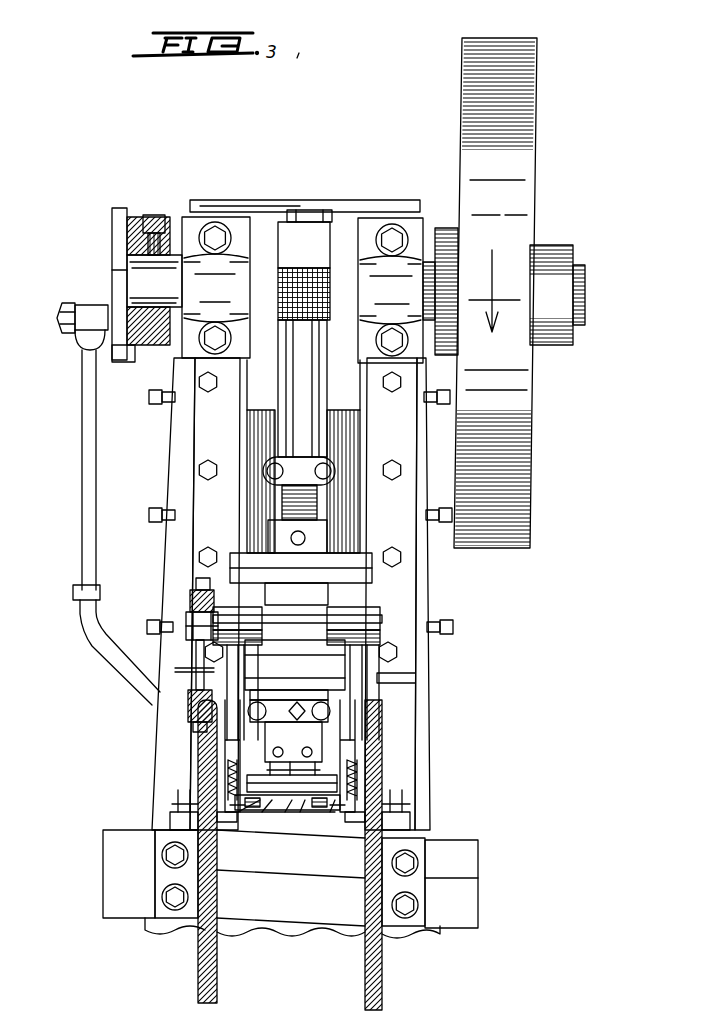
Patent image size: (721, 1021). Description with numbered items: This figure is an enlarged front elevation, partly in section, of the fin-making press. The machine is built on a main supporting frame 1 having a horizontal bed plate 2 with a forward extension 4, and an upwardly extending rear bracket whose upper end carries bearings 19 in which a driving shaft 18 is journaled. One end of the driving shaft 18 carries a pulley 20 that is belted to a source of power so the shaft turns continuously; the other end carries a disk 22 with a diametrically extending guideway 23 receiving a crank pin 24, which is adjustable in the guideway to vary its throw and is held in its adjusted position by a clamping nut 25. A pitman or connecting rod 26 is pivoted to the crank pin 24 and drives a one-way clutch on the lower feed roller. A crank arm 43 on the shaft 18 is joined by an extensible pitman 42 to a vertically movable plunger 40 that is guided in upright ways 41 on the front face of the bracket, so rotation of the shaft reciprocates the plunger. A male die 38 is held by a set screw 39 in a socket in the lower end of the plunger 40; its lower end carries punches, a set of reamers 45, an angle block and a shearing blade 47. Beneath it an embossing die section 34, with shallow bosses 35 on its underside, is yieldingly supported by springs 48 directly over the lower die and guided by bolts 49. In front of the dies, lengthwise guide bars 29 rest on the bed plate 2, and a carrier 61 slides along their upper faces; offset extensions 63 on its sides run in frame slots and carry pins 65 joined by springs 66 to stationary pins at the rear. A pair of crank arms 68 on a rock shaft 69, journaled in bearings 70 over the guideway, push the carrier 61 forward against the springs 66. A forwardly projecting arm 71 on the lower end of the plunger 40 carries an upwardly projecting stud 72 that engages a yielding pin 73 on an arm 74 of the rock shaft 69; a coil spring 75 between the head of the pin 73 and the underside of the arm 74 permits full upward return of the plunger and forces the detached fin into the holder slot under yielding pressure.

The main supporting frame 1 is at (355, 932).
The bed plate 2 is at (95, 878).
The forward extension 4 is at (197, 968).
The driving shaft 18 is at (585, 297).
The bearings 19 is at (302, 290).
The pulley 20 is at (500, 46).
The disk 22 is at (134, 212).
The guideway 23 is at (122, 275).
The crank pin 24 is at (82, 323).
The pipe nut 25 is at (66, 306).
The pitman or connecting rod 26 is at (80, 570).
The guide bars 29 is at (305, 810).
The die section 34 is at (280, 800).
The bosses 35 is at (255, 815).
The male die 38 is at (289, 706).
The set screw 39 is at (293, 748).
The plunger 40 is at (340, 418).
The upright ways 41 is at (205, 530).
The extensible pitman 42 is at (299, 381).
The crank arm 43 is at (268, 258).
The reamers 45 is at (270, 772).
The shearing blade 47 is at (307, 708).
The springs 48 is at (292, 784).
The bolts 49 is at (287, 793).
The carrier 61 is at (295, 805).
The offset extensions 63 is at (342, 815).
The pins 65 is at (188, 798).
The springs 66 is at (226, 772).
The crank arms 68 is at (238, 740).
The rock shaft 69 is at (308, 620).
The bearings 70 is at (233, 616).
The forwardly projecting arm 71 is at (192, 712).
The stud or pin 72 is at (198, 660).
The yielding pin 73 is at (198, 584).
The arm 74 is at (192, 600).
The coil spring 75 is at (190, 620).